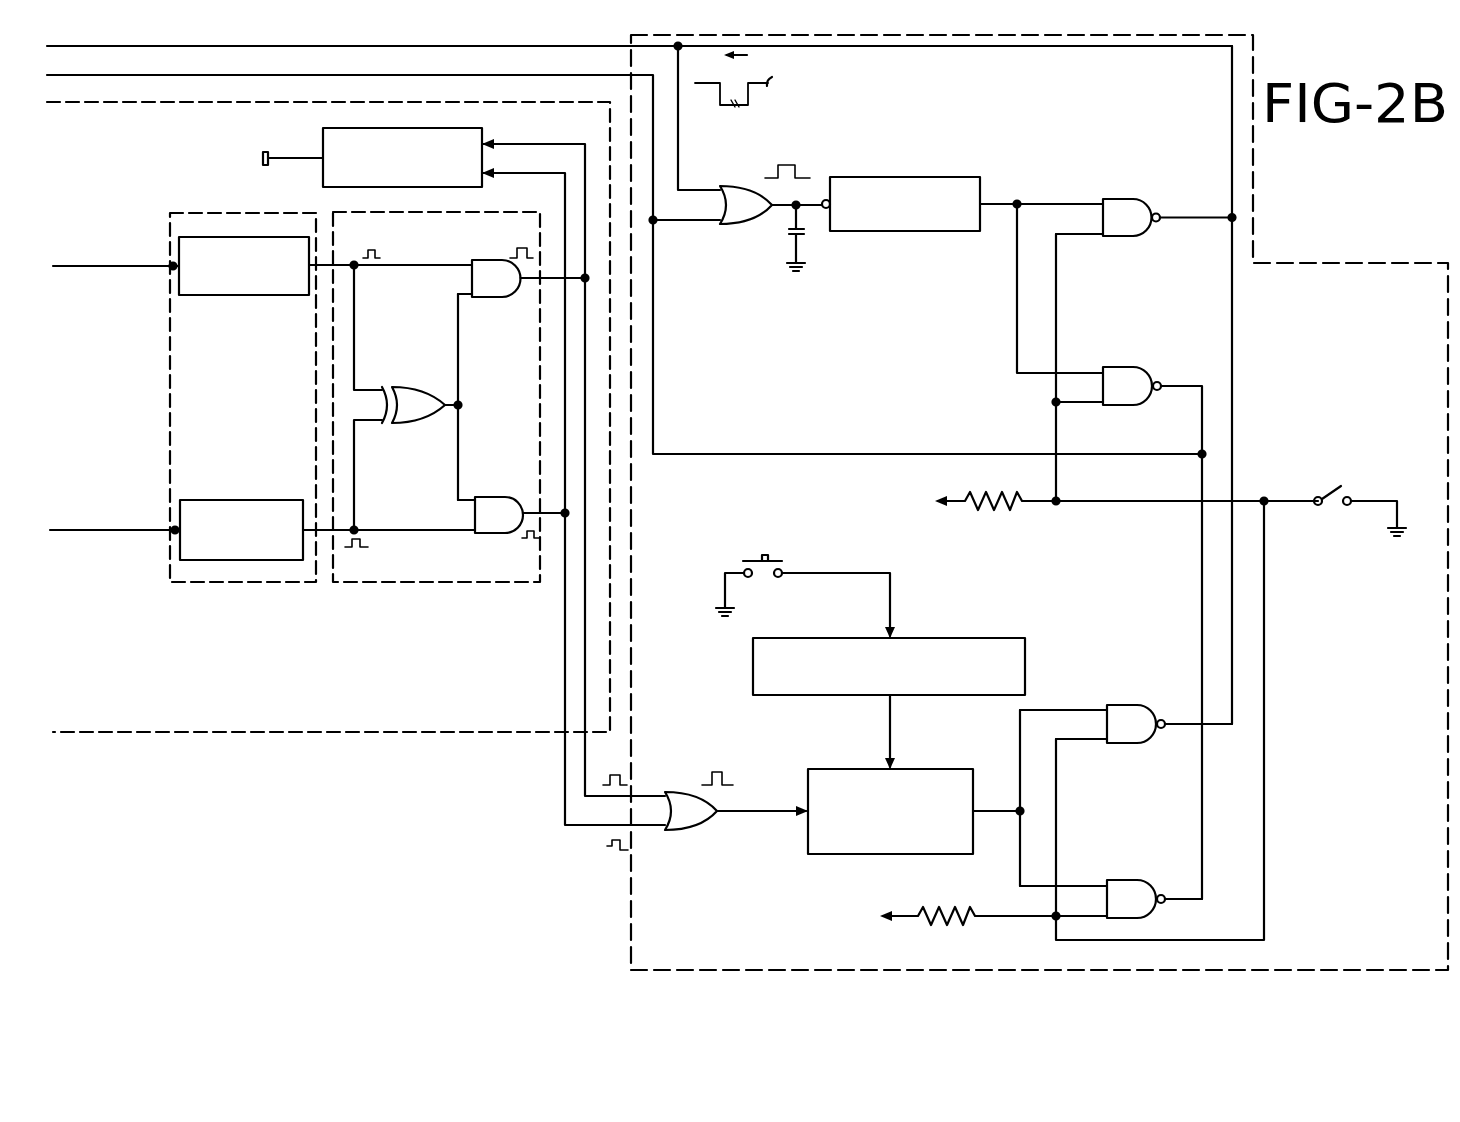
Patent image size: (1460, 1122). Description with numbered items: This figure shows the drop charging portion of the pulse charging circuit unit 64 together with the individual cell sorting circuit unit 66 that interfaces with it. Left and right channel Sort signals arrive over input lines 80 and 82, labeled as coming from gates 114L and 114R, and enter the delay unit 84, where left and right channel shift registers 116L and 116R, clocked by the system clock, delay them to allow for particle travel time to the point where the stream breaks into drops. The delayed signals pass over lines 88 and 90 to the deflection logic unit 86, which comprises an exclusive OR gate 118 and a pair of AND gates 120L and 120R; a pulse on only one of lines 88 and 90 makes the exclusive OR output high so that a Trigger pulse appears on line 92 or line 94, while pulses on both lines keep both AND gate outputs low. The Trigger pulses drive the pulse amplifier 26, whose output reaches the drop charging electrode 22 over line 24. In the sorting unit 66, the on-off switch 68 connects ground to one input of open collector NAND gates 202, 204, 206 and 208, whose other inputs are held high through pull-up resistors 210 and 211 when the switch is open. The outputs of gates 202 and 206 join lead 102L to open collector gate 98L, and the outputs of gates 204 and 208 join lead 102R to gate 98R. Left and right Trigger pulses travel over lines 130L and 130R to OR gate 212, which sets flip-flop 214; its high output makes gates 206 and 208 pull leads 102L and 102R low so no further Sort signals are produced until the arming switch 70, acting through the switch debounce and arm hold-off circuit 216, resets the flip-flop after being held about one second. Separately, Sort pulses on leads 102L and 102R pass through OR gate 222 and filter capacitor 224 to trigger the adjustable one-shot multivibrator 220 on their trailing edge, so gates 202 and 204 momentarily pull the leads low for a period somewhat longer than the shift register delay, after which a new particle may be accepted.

The lead 102L is at (528, 47).
The lead 102R is at (556, 77).
The open collector gate 98L is at (480, 61).
The open collector gate 98R is at (505, 88).
The electrode 22 is at (263, 162).
The line 24 is at (304, 158).
The pulse amplifier 26 is at (416, 118).
The line 92 is at (536, 144).
The line 94 is at (547, 173).
The delay unit 84 is at (302, 213).
The input line from gate 114L 80 is at (117, 266).
The input line from gate 114R 82 is at (119, 530).
The left gate 114L is at (156, 268).
The right gate 114R is at (163, 565).
The shift register 116L is at (257, 295).
The shift register 116R is at (256, 500).
The line 88 is at (340, 263).
The line 90 is at (325, 532).
The exclusive OR gate 118 is at (408, 385).
The AND gate 120L is at (493, 260).
The AND gate 120R is at (518, 478).
The deflection logic unit 86 is at (530, 582).
The pulse charging circuit unit 64 is at (540, 733).
The line 130L is at (585, 752).
The line 130R is at (566, 803).
The individual cell sorting circuit unit 66 is at (633, 940).
The OR gate 222 is at (742, 187).
The filter capacitor 224 is at (790, 240).
The one-shot multivibrator 220 is at (901, 177).
The open collector NAND gate 202 is at (1118, 199).
The open collector NAND gate 204 is at (1118, 367).
The open collector NAND gate 206 is at (1117, 705).
The open collector NAND gate 208 is at (1122, 880).
The pull-up resistor 210 is at (986, 497).
The pull-up resistor 211 is at (926, 913).
The on-off switch 68 is at (1337, 489).
The arming switch 70 is at (762, 556).
The switch debounce and arm hold-off circuit 216 is at (955, 638).
The OR gate 212 is at (680, 830).
The flip-flop 214 is at (816, 854).